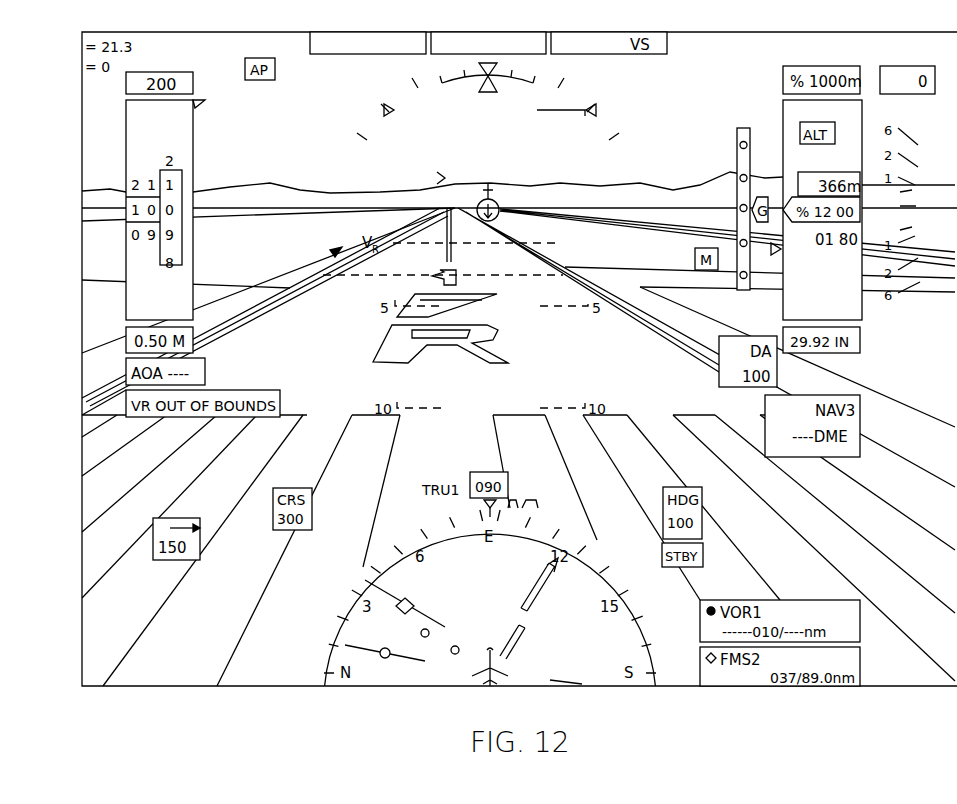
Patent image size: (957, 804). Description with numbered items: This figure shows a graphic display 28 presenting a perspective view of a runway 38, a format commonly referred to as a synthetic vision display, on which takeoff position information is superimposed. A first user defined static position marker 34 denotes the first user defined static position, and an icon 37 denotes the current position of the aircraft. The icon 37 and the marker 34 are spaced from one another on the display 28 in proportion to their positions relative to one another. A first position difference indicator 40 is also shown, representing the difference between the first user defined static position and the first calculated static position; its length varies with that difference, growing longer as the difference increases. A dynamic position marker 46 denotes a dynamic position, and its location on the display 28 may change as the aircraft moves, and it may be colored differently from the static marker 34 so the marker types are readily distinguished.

The display 28 is at (82, 247).
The first user defined static position marker 34 is at (356, 280).
The icon 37 is at (500, 672).
The runway 38 is at (650, 374).
The first position difference indicator 40 is at (337, 254).
The dynamic position marker 46 is at (453, 248).